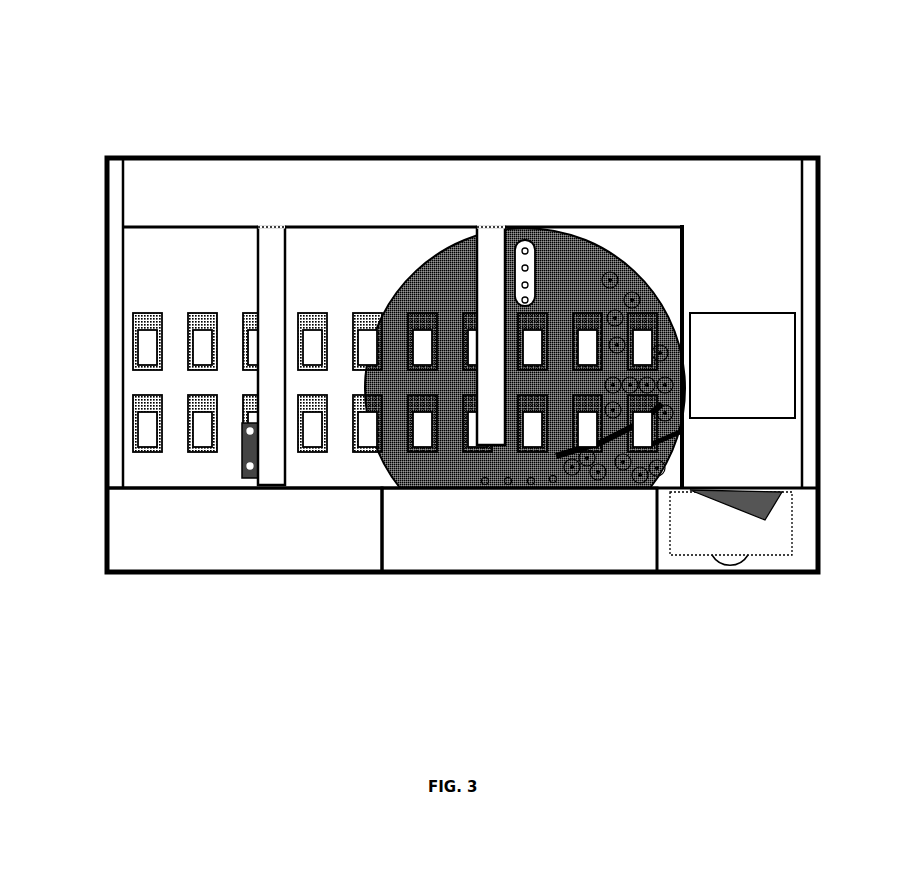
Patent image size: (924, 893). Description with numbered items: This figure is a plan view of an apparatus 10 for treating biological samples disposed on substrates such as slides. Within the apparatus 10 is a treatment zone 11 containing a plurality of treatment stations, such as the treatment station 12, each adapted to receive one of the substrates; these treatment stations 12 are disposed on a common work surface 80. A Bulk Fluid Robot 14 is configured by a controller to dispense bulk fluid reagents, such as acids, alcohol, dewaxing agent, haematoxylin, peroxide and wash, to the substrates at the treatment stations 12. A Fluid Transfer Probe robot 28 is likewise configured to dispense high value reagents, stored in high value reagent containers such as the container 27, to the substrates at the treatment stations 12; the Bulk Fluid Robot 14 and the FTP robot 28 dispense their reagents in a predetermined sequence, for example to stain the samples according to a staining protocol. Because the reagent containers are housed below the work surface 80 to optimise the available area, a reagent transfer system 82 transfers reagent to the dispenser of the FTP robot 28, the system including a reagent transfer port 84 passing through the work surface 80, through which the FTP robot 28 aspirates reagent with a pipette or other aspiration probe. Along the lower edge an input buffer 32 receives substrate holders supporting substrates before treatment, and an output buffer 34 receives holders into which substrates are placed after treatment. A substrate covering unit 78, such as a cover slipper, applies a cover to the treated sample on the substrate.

The apparatus 10 is at (138, 135).
The treatment zone 11 is at (212, 268).
The treatment station 12 is at (148, 312).
The Bulk Fluid Robot 14 is at (490, 205).
The high value reagent container 27 is at (648, 272).
The Fluid Transfer Probe robot 28 is at (268, 205).
The input buffer 32 is at (244, 530).
The output buffer 34 is at (519, 530).
The substrate covering unit 78 is at (735, 360).
The work surface 80 is at (388, 339).
The reagent transfer system 82 is at (565, 195).
The reagent transfer port 84 is at (515, 230).